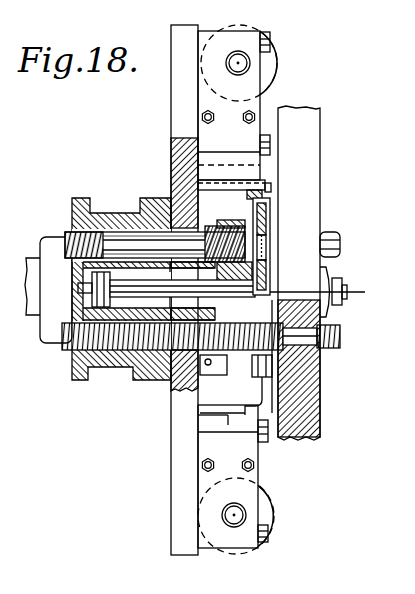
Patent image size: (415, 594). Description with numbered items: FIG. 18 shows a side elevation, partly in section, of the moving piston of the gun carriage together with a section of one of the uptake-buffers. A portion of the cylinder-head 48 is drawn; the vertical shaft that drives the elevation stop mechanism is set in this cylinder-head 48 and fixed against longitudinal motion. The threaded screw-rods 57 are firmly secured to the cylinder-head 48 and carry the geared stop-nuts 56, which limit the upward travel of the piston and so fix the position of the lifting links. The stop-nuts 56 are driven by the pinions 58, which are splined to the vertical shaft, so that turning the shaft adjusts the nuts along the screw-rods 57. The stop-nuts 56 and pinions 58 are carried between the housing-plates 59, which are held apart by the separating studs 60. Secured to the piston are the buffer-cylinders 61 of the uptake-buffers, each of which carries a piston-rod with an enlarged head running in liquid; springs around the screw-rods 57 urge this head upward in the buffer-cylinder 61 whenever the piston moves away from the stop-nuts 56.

The cylinder-head 48 is at (331, 396).
The stop-nuts 56 is at (258, 378).
The screw-rods 57 is at (63, 345).
The pinions 58 is at (272, 312).
The housing-plates 59 is at (255, 225).
The studs 60 is at (266, 226).
The buffer-cylinders 61 is at (119, 362).